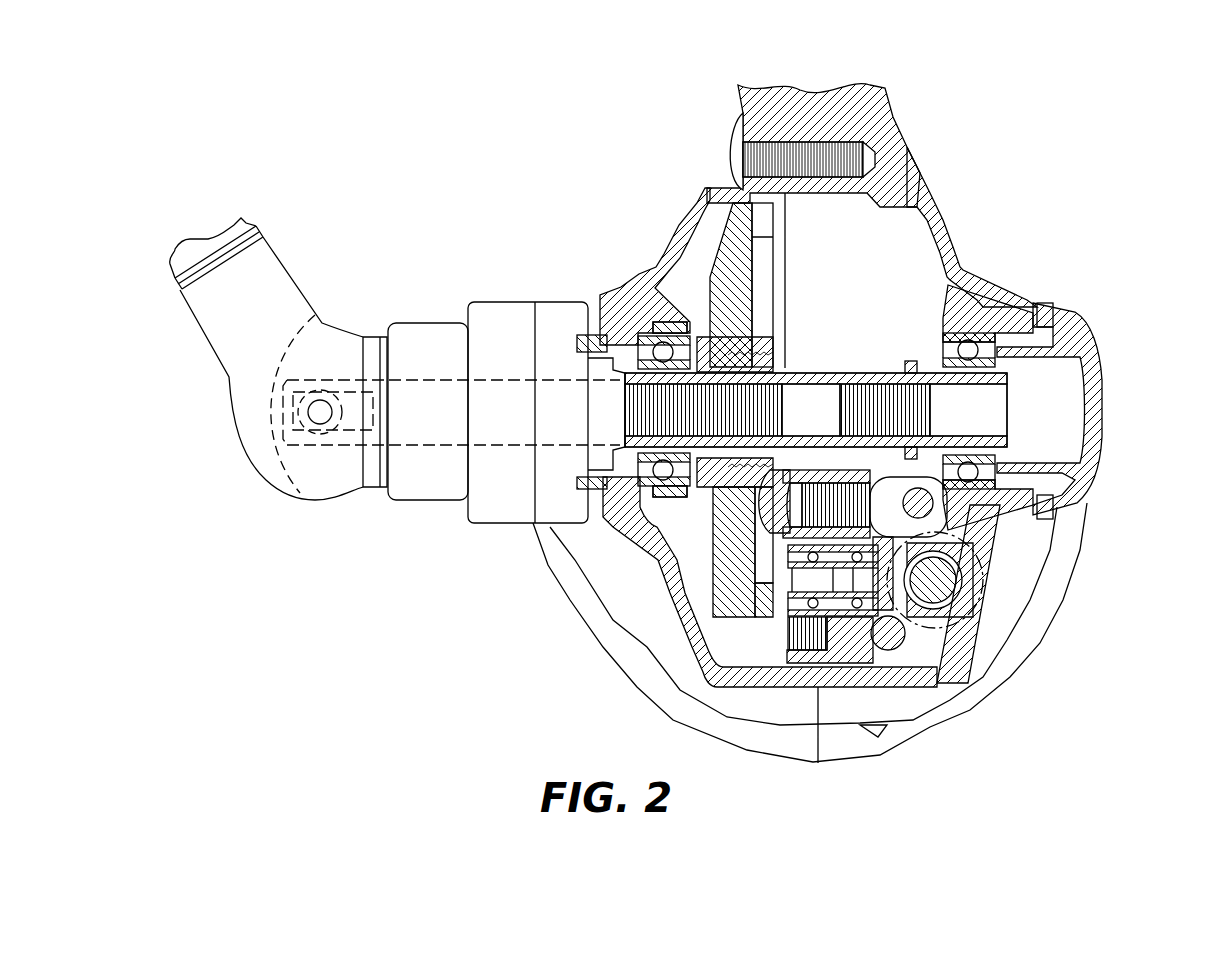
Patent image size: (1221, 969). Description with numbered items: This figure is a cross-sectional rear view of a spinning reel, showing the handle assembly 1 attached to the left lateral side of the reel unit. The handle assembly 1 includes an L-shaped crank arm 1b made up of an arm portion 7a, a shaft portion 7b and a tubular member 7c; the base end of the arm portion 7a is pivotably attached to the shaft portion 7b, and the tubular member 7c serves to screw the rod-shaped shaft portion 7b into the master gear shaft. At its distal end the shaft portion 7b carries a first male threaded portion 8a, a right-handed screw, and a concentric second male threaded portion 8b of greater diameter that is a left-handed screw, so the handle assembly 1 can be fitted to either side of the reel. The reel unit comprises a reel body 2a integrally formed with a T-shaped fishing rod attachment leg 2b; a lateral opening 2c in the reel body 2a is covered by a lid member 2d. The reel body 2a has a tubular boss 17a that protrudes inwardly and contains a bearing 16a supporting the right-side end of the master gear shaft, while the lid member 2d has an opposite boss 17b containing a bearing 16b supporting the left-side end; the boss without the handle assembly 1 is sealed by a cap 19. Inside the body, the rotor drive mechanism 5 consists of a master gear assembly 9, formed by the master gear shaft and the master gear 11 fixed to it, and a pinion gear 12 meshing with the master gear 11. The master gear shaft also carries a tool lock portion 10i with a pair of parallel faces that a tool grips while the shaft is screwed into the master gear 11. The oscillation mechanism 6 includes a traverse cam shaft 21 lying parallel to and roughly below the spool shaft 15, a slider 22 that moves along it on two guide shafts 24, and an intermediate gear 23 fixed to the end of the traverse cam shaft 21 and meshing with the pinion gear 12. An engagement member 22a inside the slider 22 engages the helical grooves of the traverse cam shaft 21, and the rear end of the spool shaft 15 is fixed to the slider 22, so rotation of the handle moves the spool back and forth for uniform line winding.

The handle assembly 1 is at (205, 213).
The crank arm 1b is at (325, 322).
The reel body 2a is at (966, 245).
The fishing rod attachment leg 2b is at (890, 100).
The opening 2c is at (742, 128).
The lid member 2d is at (686, 223).
The rotor drive mechanism 5 is at (871, 350).
The oscillation mechanism 6 is at (952, 630).
The arm portion 7a is at (262, 258).
The shaft portion 7b is at (449, 370).
The tubular member 7c is at (490, 315).
The first male threaded portion 8a is at (733, 470).
The second male threaded portion 8b is at (718, 427).
The master gear assembly 9 is at (831, 360).
The tool lock portion 10i is at (929, 352).
The master gear 11 is at (784, 289).
The pinion gear 12 is at (787, 523).
The spool shaft 15 is at (790, 515).
The bearing 16a is at (1032, 310).
The bearing 16b is at (638, 333).
The tubular boss 17a is at (985, 284).
The boss 17b is at (657, 323).
The cap 19 is at (1090, 347).
The traverse cam shaft 21 is at (997, 600).
The slider 22 is at (789, 669).
The engagement member 22a is at (870, 668).
The intermediate gear 23 is at (1020, 617).
The guide shafts 24 is at (948, 497).